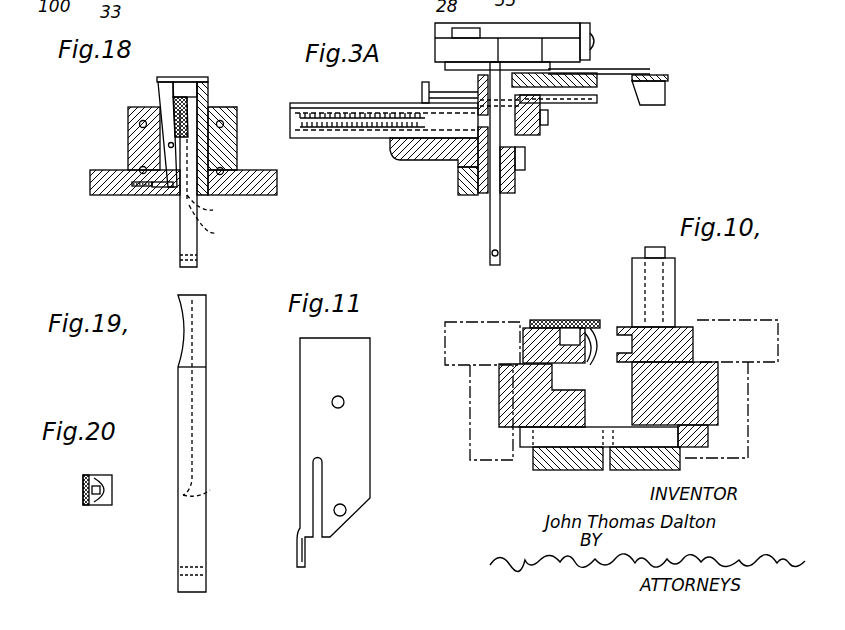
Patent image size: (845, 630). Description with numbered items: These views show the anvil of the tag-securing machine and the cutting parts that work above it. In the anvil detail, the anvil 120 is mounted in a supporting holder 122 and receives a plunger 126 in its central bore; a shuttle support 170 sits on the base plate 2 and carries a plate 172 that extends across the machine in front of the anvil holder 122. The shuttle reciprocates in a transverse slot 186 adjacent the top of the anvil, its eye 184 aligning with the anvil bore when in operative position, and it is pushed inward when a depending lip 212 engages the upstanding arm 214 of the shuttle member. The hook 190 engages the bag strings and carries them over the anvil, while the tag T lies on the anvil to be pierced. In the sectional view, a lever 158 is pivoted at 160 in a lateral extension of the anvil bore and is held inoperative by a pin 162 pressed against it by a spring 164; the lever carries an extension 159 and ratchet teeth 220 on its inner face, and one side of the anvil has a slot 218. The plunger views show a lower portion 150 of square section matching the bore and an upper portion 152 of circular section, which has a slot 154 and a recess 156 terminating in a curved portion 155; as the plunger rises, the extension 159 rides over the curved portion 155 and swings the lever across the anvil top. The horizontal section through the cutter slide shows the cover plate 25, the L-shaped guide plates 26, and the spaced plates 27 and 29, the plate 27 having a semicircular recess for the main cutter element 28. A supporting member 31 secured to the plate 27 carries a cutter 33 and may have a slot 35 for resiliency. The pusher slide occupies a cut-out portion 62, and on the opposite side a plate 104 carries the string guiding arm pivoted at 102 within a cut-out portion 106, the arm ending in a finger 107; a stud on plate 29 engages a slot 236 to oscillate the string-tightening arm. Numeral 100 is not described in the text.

In FIG. 3A, the base plate 2 is at (400, 155).
In FIG. 10, the cover plate 25 is at (452, 330).
In FIG. 10, the L-shaped plates 26 is at (748, 448).
In FIG. 10, the plate 27 is at (525, 330).
In FIG. 3A, the main cutter element 28 is at (633, 12).
In FIG. 10, the main cutter element 28 is at (600, 346).
In FIG. 10, the plate 29 is at (680, 326).
In FIG. 10, the supporting member 31 is at (548, 321).
In FIG. 11, the supporting member 31 is at (357, 405).
In FIG. 10, the cutter 33 is at (591, 326).
In FIG. 11, the cutter 33 is at (307, 566).
In FIG. 11, the slot 35 is at (322, 488).
In FIG. 10, the cut-out portion 62 is at (555, 382).
In FIG. 3A, the member 100 is at (688, 13).
In FIG. 10, the member 100 is at (632, 370).
In FIG. 10, the pivot 102 is at (605, 470).
In FIG. 10, the plate 104 is at (700, 455).
In FIG. 10, the cut-out portion 106 is at (600, 462).
In FIG. 10, the finger 107 is at (618, 403).
In FIG. 18, the anvil 120 is at (210, 78).
In FIG. 3A, the anvil 120 is at (488, 75).
In FIG. 18, the anvil holder 122 is at (100, 187).
In FIG. 3A, the anvil holder 122 is at (460, 188).
In FIG. 18, the plunger 126 is at (180, 247).
In FIG. 3A, the plunger 126 is at (503, 232).
In FIG. 19, the plunger 126 is at (217, 457).
In FIG. 20, the plunger 126 is at (96, 506).
In FIG. 19, the lower portion 150 is at (200, 538).
In FIG. 20, the lower portion 150 is at (112, 505).
In FIG. 19, the upper portion 152 is at (200, 342).
In FIG. 20, the upper portion 152 is at (112, 481).
In FIG. 19, the slot 154 is at (190, 397).
In FIG. 20, the slot 154 is at (94, 494).
In FIG. 18, the curved portion 155 is at (218, 225).
In FIG. 19, the curved portion 155 is at (210, 492).
In FIG. 18, the recess 156 is at (157, 156).
In FIG. 19, the recess 156 is at (183, 351).
In FIG. 18, the lever 158 is at (160, 90).
In FIG. 18, the extension 159 is at (217, 160).
In FIG. 18, the pivot 160 is at (169, 144).
In FIG. 18, the pin 162 is at (168, 188).
In FIG. 18, the spring 164 is at (138, 186).
In FIG. 3A, the shuttle support 170 is at (355, 140).
In FIG. 3A, the plate 172 is at (540, 127).
In FIG. 3A, the eye 184 is at (545, 100).
In FIG. 3A, the transverse slot 186 is at (480, 96).
In FIG. 3A, the hook 190 is at (620, 67).
In FIG. 3A, the depending lip 212 is at (565, 72).
In FIG. 3A, the upstanding arm 214 is at (422, 92).
In FIG. 3A, the slot 218 is at (507, 130).
In FIG. 18, the ratchet teeth 220 is at (174, 113).
In FIG. 10, the slot 236 is at (670, 283).
In FIG. 18, the tag T is at (194, 77).
In FIG. 3A, the tag T is at (460, 74).